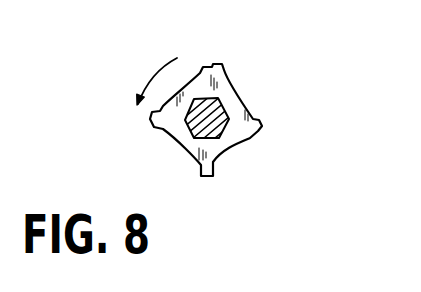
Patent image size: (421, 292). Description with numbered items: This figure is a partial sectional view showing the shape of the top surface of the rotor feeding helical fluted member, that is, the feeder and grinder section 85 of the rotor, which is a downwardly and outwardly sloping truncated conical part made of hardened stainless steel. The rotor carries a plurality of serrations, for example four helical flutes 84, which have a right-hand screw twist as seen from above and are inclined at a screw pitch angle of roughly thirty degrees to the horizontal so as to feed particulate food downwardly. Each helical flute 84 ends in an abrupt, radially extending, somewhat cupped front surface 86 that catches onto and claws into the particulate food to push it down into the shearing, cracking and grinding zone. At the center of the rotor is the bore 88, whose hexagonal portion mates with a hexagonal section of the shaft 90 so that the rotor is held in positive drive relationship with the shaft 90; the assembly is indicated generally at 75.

The wrench socket assembly 75 is at (151, 70).
The helical flutes 84 is at (215, 67).
The feeder and grinder section 85 is at (250, 91).
The cupped front surface 86 is at (208, 66).
The bore 88 is at (197, 121).
The shaft 90 is at (214, 128).